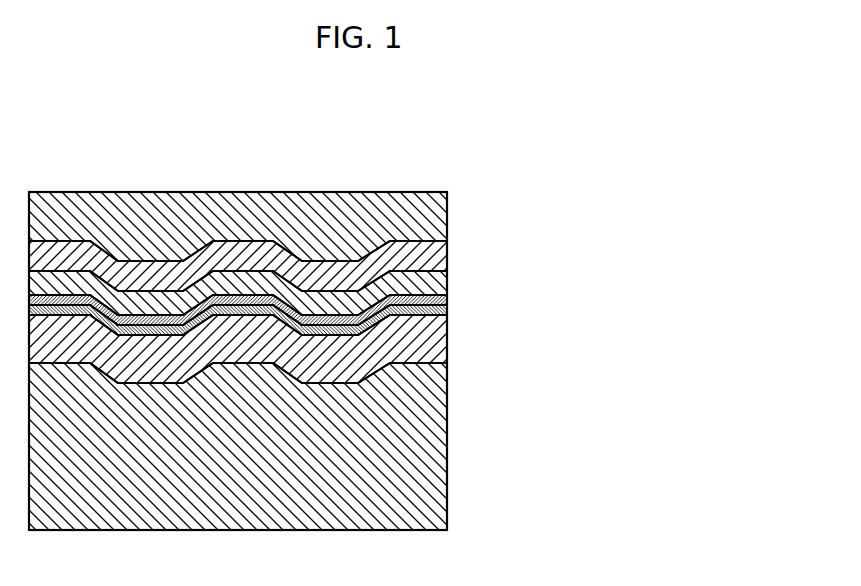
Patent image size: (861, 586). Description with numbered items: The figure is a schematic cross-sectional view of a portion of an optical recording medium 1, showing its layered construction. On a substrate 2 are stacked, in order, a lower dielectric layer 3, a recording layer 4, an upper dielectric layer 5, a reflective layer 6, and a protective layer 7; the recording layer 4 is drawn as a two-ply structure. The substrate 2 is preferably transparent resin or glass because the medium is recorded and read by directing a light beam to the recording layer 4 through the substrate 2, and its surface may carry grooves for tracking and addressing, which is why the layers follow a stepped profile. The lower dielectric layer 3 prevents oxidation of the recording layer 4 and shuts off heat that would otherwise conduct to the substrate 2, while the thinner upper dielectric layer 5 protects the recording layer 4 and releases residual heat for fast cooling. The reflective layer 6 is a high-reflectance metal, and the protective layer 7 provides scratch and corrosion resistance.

The optical recording medium 1 is at (462, 507).
The substrate 2 is at (435, 432).
The lower dielectric layer 3 is at (437, 348).
The recording layer 4 is at (449, 295).
The upper dielectric layer 5 is at (437, 277).
The reflective layer 6 is at (435, 251).
The protective layer 7 is at (435, 213).